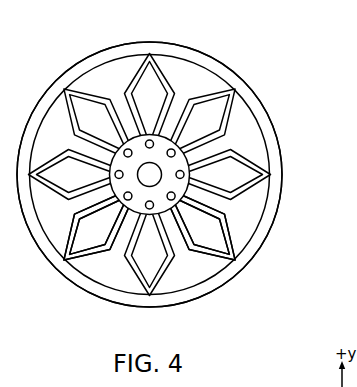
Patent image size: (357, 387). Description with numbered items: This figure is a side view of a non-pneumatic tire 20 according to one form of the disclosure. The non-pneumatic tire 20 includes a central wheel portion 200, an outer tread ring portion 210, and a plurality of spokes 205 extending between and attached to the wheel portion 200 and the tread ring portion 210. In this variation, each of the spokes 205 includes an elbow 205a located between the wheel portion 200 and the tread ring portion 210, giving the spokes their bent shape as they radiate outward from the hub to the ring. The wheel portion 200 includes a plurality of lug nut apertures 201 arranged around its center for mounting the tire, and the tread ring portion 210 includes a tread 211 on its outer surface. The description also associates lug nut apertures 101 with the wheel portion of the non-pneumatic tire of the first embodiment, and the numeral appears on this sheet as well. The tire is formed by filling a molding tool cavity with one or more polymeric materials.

The non-pneumatic tire 20 is at (251, 53).
The tread ring portion 210 is at (262, 115).
The tread 211 is at (282, 150).
The lug nut apertures 201 is at (180, 174).
The wheel portion 200 is at (183, 193).
The spokes 205 is at (83, 90).
The elbow 205a is at (95, 261).
The lug nut apertures 101 is at (317, 233).